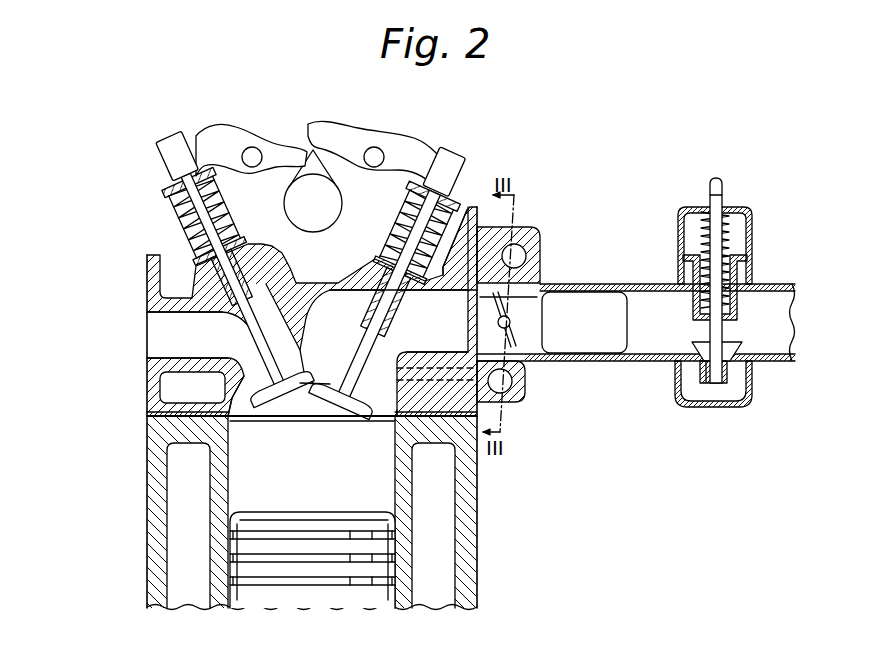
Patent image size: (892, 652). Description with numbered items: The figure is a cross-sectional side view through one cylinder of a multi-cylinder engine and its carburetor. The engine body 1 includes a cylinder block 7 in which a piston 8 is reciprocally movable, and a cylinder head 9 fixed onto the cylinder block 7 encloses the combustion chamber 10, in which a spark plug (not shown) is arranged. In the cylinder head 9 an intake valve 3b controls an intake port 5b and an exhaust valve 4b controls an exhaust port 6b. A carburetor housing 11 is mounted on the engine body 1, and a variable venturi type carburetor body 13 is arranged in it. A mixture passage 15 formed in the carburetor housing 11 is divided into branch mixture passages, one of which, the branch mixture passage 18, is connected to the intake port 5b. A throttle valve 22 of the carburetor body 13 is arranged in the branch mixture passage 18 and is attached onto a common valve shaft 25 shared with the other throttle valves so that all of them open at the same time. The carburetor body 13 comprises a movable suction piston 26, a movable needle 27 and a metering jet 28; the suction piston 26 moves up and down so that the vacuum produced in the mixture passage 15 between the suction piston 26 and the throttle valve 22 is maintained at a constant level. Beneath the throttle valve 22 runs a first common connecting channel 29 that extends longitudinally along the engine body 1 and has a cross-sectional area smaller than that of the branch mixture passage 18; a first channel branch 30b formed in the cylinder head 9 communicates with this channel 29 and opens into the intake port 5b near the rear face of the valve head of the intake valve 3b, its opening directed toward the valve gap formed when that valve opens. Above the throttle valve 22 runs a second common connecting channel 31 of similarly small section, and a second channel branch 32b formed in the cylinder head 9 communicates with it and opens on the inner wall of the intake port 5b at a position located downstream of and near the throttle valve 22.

The engine body 1 is at (477, 525).
The intake valve 3b is at (358, 292).
The exhaust valve 4b is at (258, 256).
The intake port 5b is at (455, 327).
The exhaust port 6b is at (203, 345).
The cylinder block 7 is at (425, 588).
The piston 8 is at (316, 598).
The cylinder head 9 is at (255, 252).
The combustion chamber 10 is at (325, 457).
The carburetor housing 11 is at (613, 362).
The carburetor body 13 is at (748, 209).
The mixture passage 15 is at (646, 294).
The branch mixture passage 18 is at (533, 320).
The throttle valve 22 is at (512, 297).
The common valve shaft 25 is at (510, 328).
The suction piston 26 is at (740, 295).
The needle 27 is at (722, 332).
The metering jet 28 is at (724, 374).
The first common connecting channel 29 is at (506, 386).
The first channel branch 30b is at (406, 372).
The second common connecting channel 31 is at (516, 246).
The second channel branch 32b is at (466, 263).